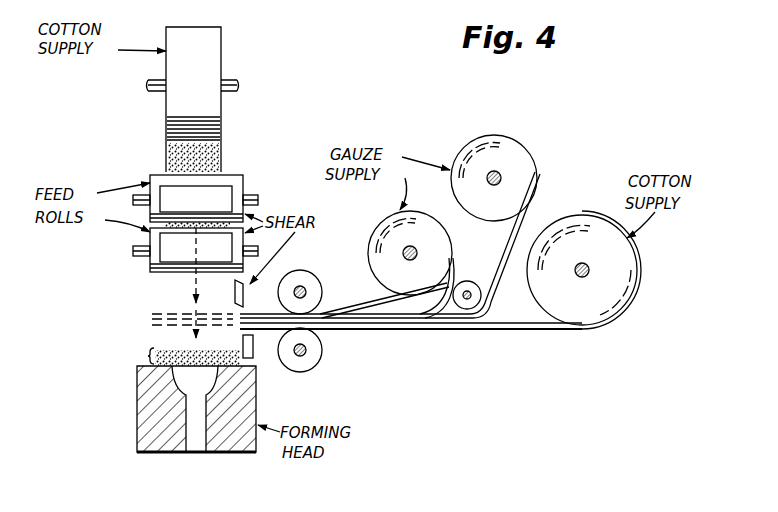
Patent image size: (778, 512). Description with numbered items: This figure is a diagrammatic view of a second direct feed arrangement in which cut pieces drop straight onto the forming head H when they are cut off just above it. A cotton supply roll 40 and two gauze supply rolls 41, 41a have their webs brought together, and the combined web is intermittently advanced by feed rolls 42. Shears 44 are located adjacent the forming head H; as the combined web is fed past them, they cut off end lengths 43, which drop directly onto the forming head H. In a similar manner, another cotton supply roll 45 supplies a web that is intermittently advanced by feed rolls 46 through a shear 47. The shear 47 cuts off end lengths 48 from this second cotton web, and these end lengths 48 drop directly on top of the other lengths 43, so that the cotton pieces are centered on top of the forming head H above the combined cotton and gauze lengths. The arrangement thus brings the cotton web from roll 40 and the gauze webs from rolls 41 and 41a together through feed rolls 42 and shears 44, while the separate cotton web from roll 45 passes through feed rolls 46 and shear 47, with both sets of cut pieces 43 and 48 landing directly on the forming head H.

The cotton supply roll 40 is at (628, 278).
The gauze supply roll 41 is at (440, 256).
The gauze supply roll 41a is at (536, 168).
The feed rolls 42 is at (315, 282).
The end lengths 43 is at (147, 356).
The shears 44 is at (247, 293).
The cotton supply roll 45 is at (210, 52).
The feed rolls 46 is at (158, 180).
The shear 47 is at (220, 190).
The end lengths 48 is at (170, 350).
The forming head H is at (236, 456).